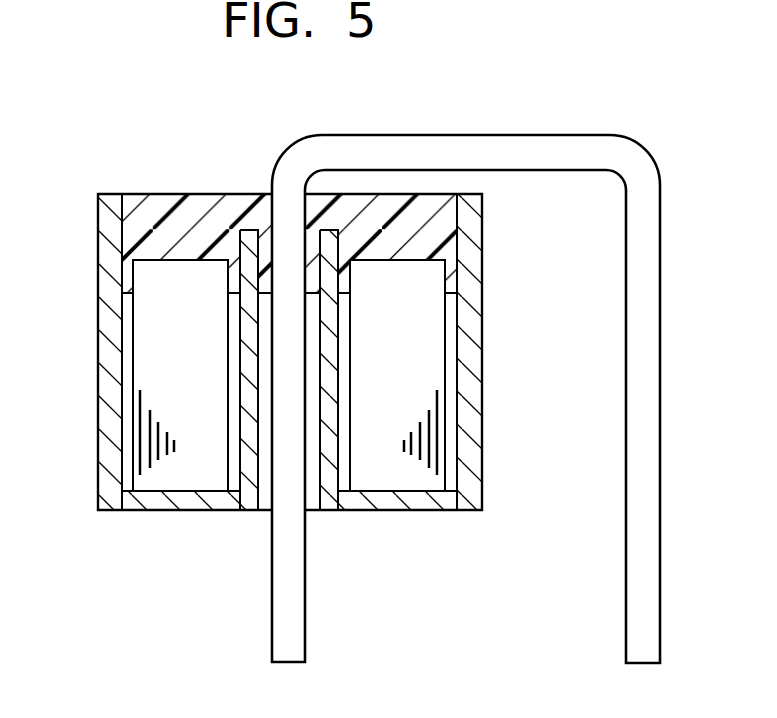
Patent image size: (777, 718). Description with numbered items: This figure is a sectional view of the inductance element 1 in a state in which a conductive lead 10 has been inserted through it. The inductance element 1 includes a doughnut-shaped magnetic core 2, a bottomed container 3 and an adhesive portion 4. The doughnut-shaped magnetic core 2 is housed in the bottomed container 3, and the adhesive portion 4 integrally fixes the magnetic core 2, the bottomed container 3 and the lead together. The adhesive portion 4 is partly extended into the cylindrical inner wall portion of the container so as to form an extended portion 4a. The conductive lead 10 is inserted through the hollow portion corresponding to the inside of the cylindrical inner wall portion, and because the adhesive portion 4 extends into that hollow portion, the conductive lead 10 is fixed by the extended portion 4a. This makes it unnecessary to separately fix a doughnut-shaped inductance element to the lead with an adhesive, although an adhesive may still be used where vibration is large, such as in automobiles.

The inductance element 1 is at (59, 157).
The doughnut-shaped magnetic core 2 is at (438, 349).
The bottomed container 3 is at (472, 297).
The adhesive portion 4 is at (157, 197).
The extended portion 4a is at (267, 247).
The conductive lead 10 is at (298, 620).